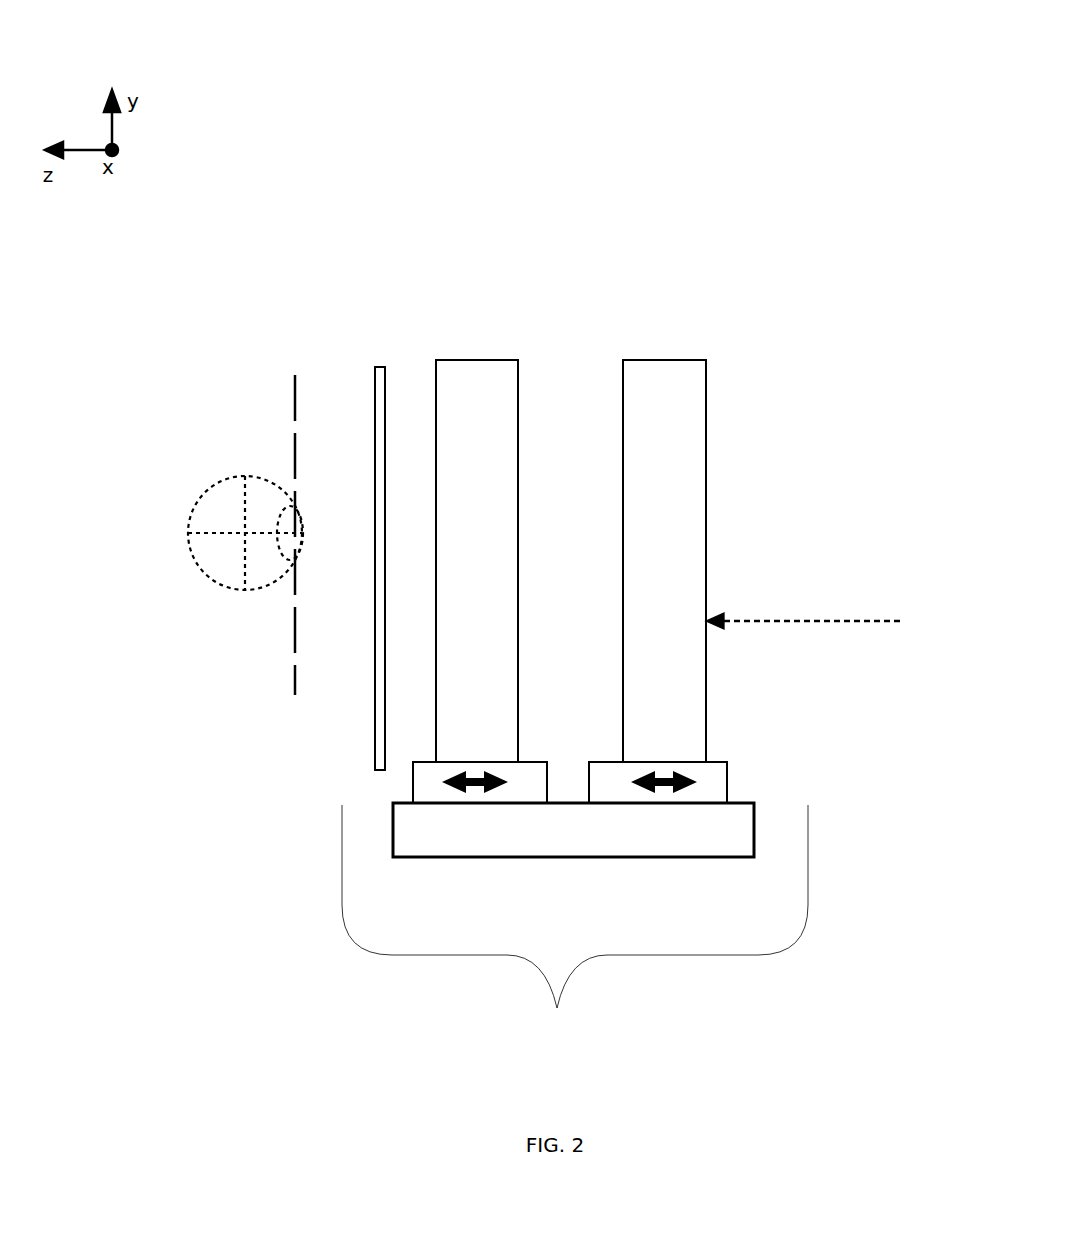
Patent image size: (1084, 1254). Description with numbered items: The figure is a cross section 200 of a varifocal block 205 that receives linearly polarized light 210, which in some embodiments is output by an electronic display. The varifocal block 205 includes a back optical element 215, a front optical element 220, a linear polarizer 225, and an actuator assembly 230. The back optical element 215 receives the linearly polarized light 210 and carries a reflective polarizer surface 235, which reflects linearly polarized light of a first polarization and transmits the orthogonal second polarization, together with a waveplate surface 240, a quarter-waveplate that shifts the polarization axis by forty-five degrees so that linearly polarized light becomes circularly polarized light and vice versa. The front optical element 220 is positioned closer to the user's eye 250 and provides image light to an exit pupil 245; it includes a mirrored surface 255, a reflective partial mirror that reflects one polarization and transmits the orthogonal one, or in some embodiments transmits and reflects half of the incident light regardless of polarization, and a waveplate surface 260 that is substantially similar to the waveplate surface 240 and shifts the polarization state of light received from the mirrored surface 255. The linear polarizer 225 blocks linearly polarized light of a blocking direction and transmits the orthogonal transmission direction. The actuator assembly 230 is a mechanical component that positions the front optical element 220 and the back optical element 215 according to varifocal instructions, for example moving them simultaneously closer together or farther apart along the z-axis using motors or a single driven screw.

The cross section 200 is at (207, 35).
The varifocal block 205 is at (537, 1074).
The linearly polarized light 210 is at (828, 656).
The back optical element 215 is at (706, 437).
The front optical element 220 is at (436, 360).
The linear polarizer 225 is at (378, 400).
The actuator assembly 230 is at (503, 857).
The reflective polarizer surface 235 is at (706, 456).
The waveplate surface 240 is at (623, 393).
The exit pupil 245 is at (295, 627).
The eye 250 is at (240, 477).
The mirrored surface 255 is at (518, 415).
The waveplate surface 260 is at (436, 680).